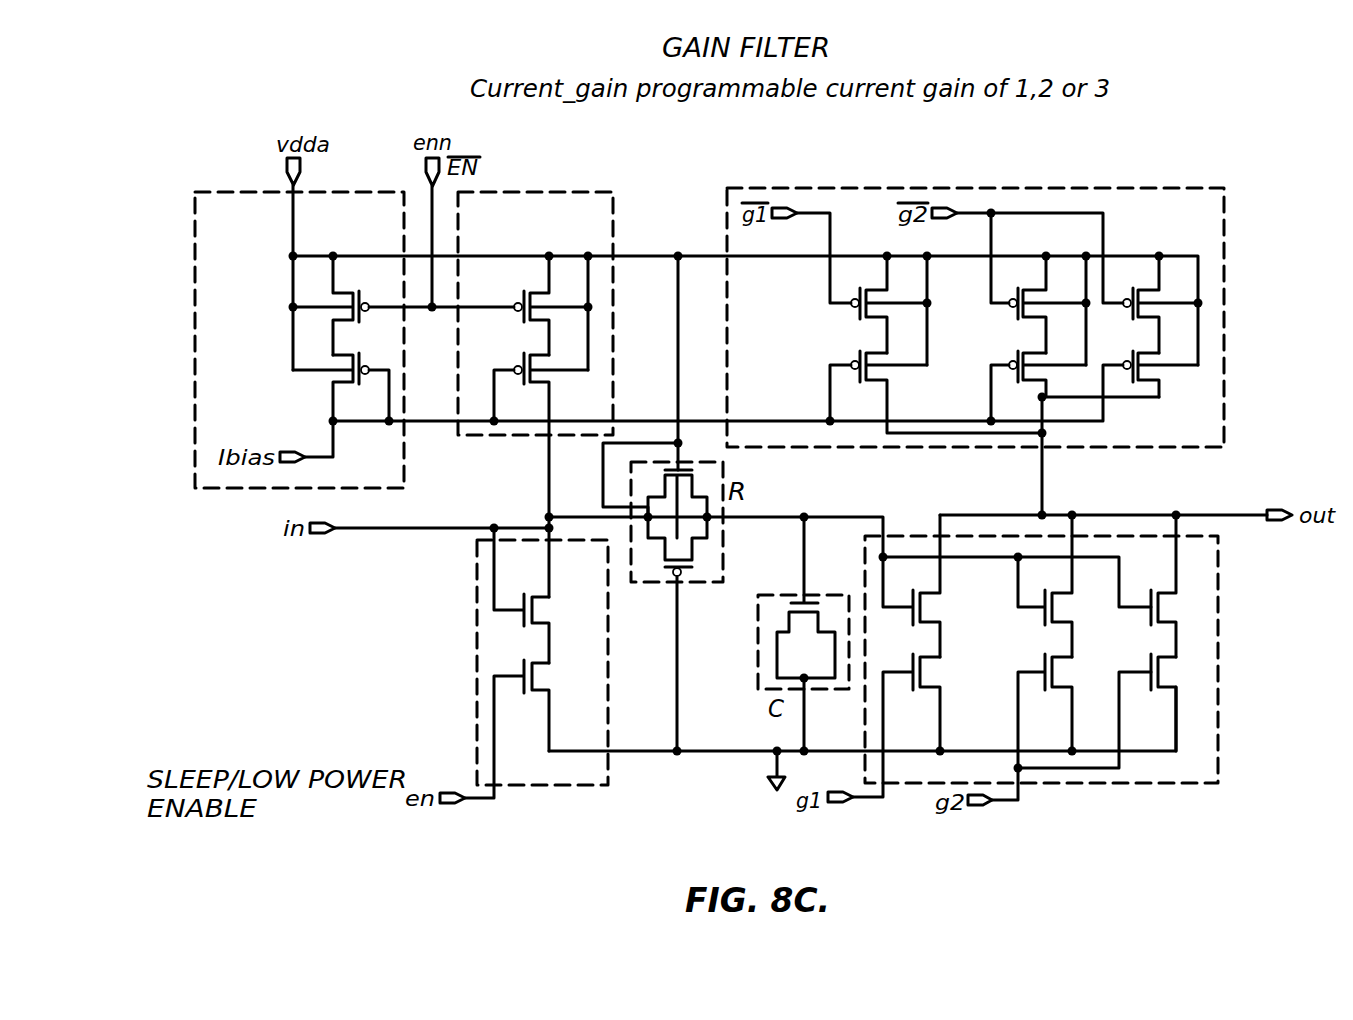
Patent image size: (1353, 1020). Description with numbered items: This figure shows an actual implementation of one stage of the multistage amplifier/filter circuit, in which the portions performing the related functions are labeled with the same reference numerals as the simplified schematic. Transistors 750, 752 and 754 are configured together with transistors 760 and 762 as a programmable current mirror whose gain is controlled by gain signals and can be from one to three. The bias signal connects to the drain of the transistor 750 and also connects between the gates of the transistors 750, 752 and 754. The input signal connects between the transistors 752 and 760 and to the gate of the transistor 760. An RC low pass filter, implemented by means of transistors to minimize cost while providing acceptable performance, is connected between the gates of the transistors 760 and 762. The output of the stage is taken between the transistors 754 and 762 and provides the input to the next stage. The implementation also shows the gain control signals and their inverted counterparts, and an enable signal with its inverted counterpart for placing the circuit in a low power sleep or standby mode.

The transistor 750 is at (212, 192).
The transistor 752 is at (560, 192).
The transistor 754 is at (1224, 244).
The transistor 760 is at (477, 583).
The transistor 762 is at (1218, 644).